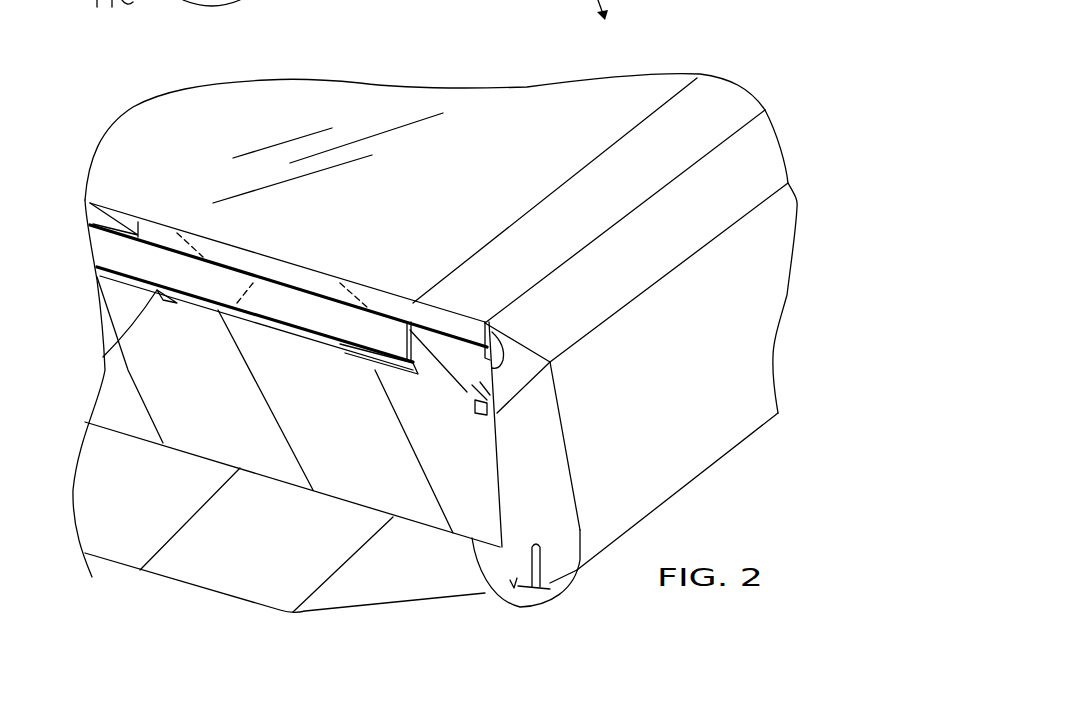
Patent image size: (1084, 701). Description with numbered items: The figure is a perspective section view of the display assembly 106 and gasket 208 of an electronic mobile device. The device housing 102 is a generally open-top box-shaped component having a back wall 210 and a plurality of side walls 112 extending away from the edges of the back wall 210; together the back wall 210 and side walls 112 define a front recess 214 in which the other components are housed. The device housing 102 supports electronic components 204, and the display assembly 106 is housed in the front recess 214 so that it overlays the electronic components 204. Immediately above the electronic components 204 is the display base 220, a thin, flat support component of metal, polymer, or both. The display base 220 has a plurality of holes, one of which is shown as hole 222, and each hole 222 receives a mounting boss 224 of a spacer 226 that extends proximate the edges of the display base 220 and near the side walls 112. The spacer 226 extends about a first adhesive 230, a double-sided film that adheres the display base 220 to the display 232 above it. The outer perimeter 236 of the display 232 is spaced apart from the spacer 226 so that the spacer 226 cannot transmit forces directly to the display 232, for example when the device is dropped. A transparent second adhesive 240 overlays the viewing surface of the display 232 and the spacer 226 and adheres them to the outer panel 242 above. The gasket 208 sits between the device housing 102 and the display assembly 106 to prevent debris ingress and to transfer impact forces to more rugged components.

The device housing 102 is at (712, 470).
The display assembly 106 is at (474, 150).
The side walls 112 is at (726, 342).
The electronic components 204 is at (550, 590).
The gasket 208 is at (538, 354).
The back wall 210 is at (188, 585).
The front recess 214 is at (470, 483).
The display base 220 is at (103, 355).
The hole 222 is at (418, 372).
The mounting boss 224 is at (453, 390).
The spacer 226 is at (462, 338).
The first adhesive 230 is at (217, 308).
The display 232 is at (97, 264).
The outer perimeter 236 is at (413, 332).
The second adhesive 240 is at (137, 237).
The outer panel 242 is at (166, 124).